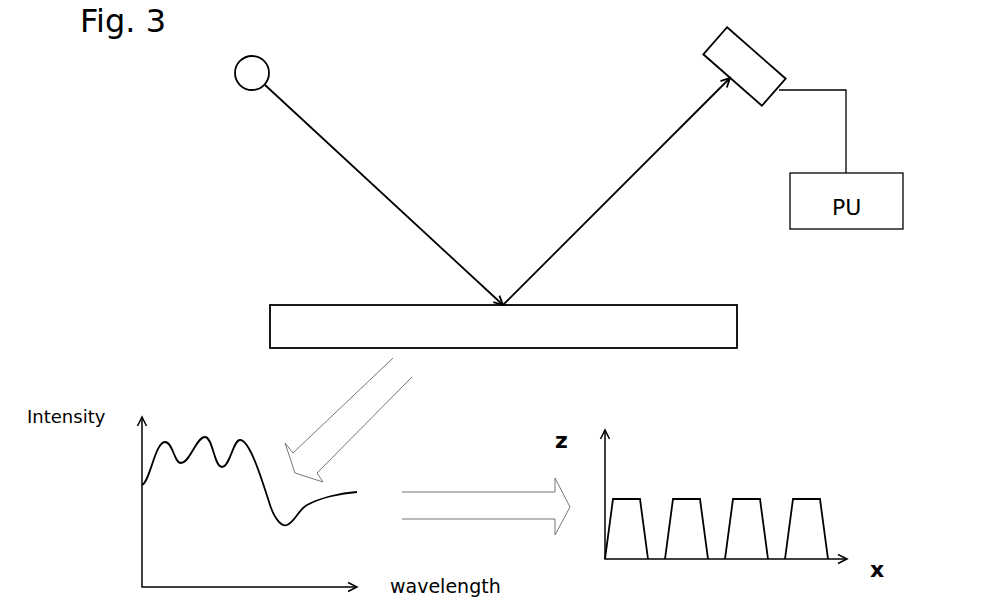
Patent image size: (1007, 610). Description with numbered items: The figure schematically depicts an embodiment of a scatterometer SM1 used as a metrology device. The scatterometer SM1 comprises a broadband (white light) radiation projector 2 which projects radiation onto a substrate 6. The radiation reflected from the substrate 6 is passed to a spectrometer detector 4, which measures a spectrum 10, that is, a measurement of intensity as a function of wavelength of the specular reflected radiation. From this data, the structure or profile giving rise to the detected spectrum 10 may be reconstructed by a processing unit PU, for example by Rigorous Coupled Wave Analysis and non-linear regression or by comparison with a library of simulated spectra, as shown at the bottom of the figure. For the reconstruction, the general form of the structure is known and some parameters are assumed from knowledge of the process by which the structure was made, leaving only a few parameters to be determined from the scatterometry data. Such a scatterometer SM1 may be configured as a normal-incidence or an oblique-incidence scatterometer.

The broadband radiation projector 2 is at (269, 68).
The spectrometer detector 4 is at (777, 70).
The substrate 6 is at (510, 338).
The spectrum 10 is at (648, 108).
The scatterometer SM1 is at (222, 183).